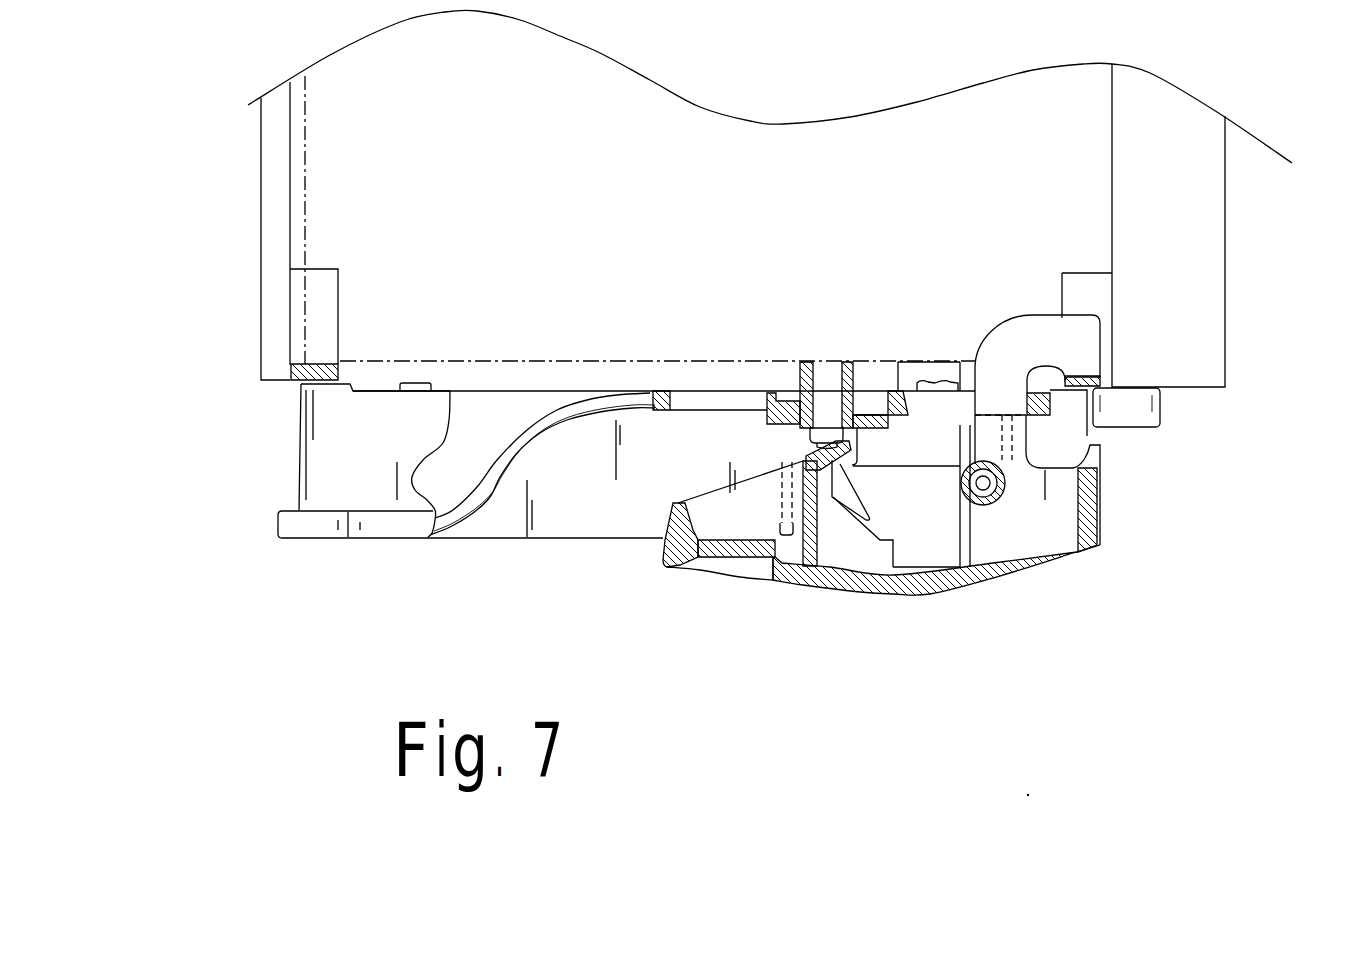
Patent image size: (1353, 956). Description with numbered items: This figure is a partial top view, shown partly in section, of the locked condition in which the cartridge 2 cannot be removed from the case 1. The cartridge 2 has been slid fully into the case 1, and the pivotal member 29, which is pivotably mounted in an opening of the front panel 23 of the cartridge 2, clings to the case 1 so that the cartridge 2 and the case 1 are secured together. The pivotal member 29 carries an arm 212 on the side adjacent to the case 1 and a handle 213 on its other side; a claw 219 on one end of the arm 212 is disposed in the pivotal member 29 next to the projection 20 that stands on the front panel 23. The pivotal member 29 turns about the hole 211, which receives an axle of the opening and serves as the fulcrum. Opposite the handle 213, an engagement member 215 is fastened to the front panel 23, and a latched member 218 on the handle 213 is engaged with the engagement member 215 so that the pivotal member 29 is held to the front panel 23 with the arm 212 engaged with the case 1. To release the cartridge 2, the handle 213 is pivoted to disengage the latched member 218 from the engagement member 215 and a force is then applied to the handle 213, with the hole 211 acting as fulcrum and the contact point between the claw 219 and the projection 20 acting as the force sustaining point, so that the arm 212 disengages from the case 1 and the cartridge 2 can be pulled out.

The case 1 is at (282, 195).
The cartridge 2 is at (603, 189).
The projection 20 is at (1138, 415).
The front panel 23 is at (400, 524).
The pivotal member 29 is at (878, 591).
The hole 211 is at (985, 490).
The arm 212 is at (1097, 343).
The handle 213 is at (660, 556).
The engagement member 215 is at (855, 497).
The latched member 218 is at (800, 464).
The claw 219 is at (1096, 441).